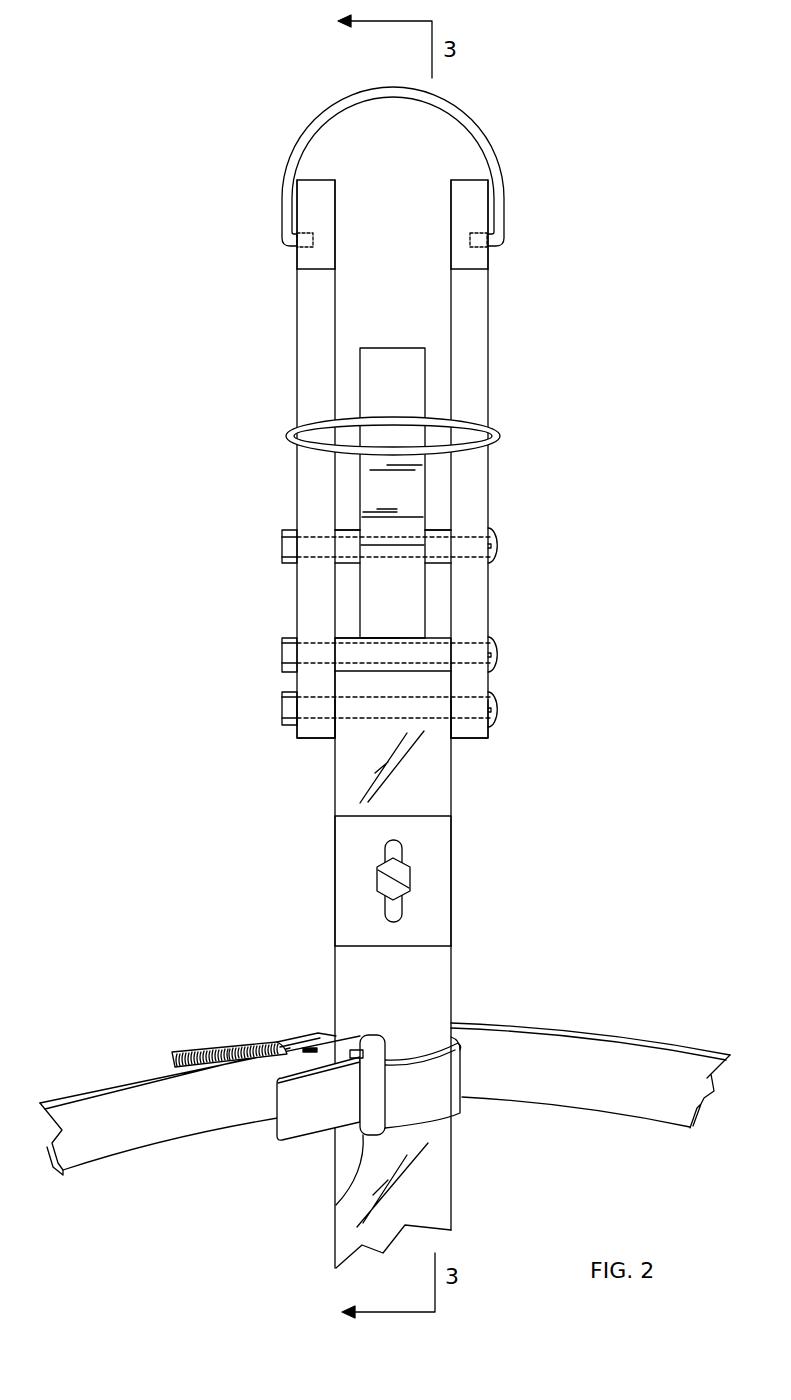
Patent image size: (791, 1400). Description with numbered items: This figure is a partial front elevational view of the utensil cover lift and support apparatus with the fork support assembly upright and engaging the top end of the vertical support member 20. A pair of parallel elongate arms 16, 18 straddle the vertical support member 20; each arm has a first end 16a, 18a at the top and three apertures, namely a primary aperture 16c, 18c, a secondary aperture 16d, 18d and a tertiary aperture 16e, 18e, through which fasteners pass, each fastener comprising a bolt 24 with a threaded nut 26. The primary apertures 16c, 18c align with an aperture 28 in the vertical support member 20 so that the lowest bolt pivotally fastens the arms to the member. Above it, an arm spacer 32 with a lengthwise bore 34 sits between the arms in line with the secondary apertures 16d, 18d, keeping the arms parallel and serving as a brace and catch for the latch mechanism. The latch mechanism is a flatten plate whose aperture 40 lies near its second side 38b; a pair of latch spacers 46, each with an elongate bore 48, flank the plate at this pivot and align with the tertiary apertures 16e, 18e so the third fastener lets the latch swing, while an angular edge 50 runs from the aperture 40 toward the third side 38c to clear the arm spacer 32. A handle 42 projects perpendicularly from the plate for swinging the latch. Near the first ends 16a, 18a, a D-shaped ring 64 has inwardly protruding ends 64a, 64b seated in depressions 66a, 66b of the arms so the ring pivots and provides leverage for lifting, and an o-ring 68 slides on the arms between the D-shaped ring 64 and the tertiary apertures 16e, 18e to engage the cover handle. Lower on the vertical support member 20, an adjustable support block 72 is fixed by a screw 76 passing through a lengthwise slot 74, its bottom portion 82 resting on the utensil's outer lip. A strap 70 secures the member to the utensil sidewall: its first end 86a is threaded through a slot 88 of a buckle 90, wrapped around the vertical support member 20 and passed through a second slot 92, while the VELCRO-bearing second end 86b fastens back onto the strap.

The elongate arm 16 is at (488, 387).
The first end of elongate arm 16a is at (488, 310).
The primary aperture 16c is at (472, 720).
The secondary aperture 16d is at (468, 642).
The tertiary aperture 16e is at (468, 537).
The elongate arm 18 is at (297, 403).
The first end of elongate arm 18a is at (297, 308).
The primary aperture 18c is at (317, 720).
The secondary aperture 18d is at (318, 643).
The tertiary aperture 18e is at (312, 535).
The vertical support member 20 is at (452, 780).
The bolt 24 is at (495, 696).
The nut 26 is at (283, 707).
The aperture of vertical support member 28 is at (360, 735).
The arm spacer 32 is at (443, 638).
The bore 34 is at (395, 640).
The second side 38b is at (438, 528).
The third side 38c is at (373, 640).
The aperture 40 is at (400, 558).
The handle 42 is at (393, 348).
The latch spacer 46 is at (350, 564).
The elongate bore 48 is at (345, 535).
The angular edge 50 is at (361, 600).
The D-shaped ring 64 is at (500, 168).
The inwardly protruding end of D-shaped ring 64a is at (500, 238).
The inwardly protruding end of D-shaped ring 64b is at (290, 247).
The depression 66a is at (480, 247).
The depression 66b is at (308, 250).
The o-ring 68 is at (290, 447).
The strap 70 is at (557, 1023).
The adjustable support block 72 is at (452, 893).
The slot 74 is at (385, 910).
The screw 76 is at (377, 878).
The bottom portion of support block 82 is at (403, 948).
The first end of strap 86a is at (295, 1142).
The second end of strap 86b is at (205, 1047).
The slot of buckle 88 is at (310, 1050).
The buckle 90 is at (336, 1205).
The second slot of buckle 92 is at (358, 1047).